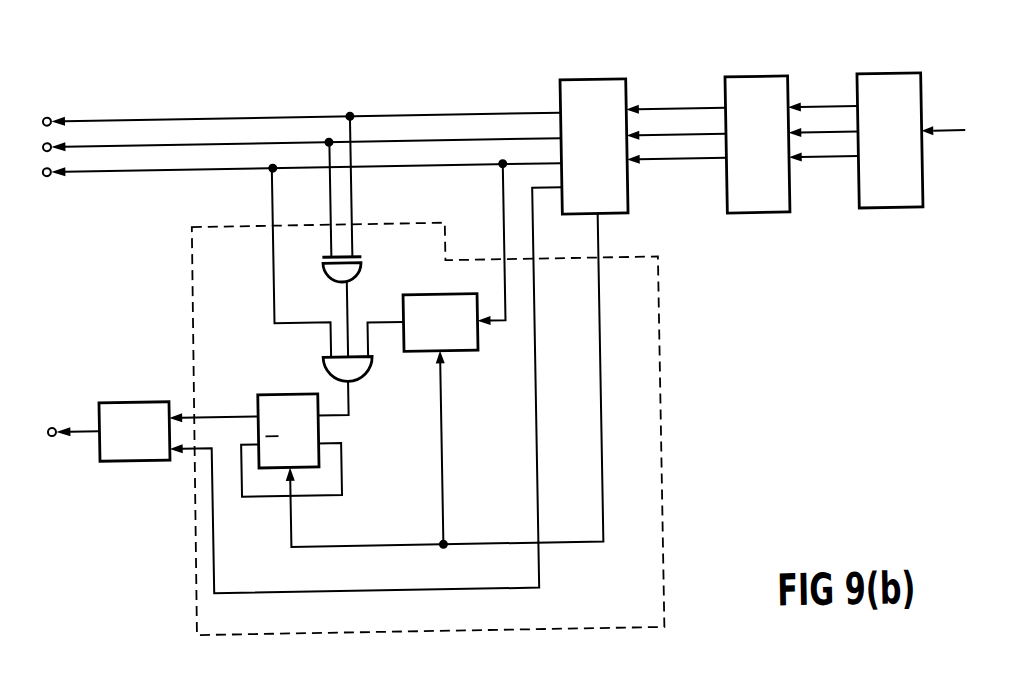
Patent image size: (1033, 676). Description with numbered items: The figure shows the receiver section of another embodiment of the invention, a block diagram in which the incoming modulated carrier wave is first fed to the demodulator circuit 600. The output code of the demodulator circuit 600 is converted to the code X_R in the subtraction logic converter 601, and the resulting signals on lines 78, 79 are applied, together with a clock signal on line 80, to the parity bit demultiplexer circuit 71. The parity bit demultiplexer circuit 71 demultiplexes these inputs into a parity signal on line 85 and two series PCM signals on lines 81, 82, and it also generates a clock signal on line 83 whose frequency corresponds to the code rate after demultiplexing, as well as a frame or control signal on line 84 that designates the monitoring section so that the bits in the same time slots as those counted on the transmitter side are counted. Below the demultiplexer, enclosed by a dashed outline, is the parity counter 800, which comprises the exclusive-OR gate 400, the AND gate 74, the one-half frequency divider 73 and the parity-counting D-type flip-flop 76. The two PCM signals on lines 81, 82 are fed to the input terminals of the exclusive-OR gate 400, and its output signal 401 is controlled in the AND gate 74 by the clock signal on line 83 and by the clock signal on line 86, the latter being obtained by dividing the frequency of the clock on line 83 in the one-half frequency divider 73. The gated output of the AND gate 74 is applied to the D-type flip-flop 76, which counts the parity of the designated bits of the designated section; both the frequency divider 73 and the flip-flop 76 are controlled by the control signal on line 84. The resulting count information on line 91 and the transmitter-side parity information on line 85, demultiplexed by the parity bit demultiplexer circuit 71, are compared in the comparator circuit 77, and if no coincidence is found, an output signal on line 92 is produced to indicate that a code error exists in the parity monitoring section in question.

The parity bit demultiplexer circuit 71 is at (604, 83).
The subtraction logic converter 601 is at (757, 83).
The demodulator circuit 600 is at (885, 82).
The line 78 is at (675, 113).
The line 79 is at (676, 139).
The line 80 is at (675, 163).
The line 81 is at (103, 115).
The line 82 is at (104, 141).
The line 83 is at (103, 166).
The exclusive-OR gate 400 is at (365, 258).
The output signal 401 is at (346, 297).
The line 86 is at (380, 320).
The ½ frequency divider 73 is at (424, 295).
The AND gate 74 is at (368, 372).
The line 85 is at (537, 336).
The line 84 is at (601, 336).
The parity counter 800 is at (660, 336).
The line 92 is at (78, 425).
The line 91 is at (203, 414).
The parity-counting, D-type flip-flop 76 is at (268, 392).
The comparator circuit 77 is at (148, 456).